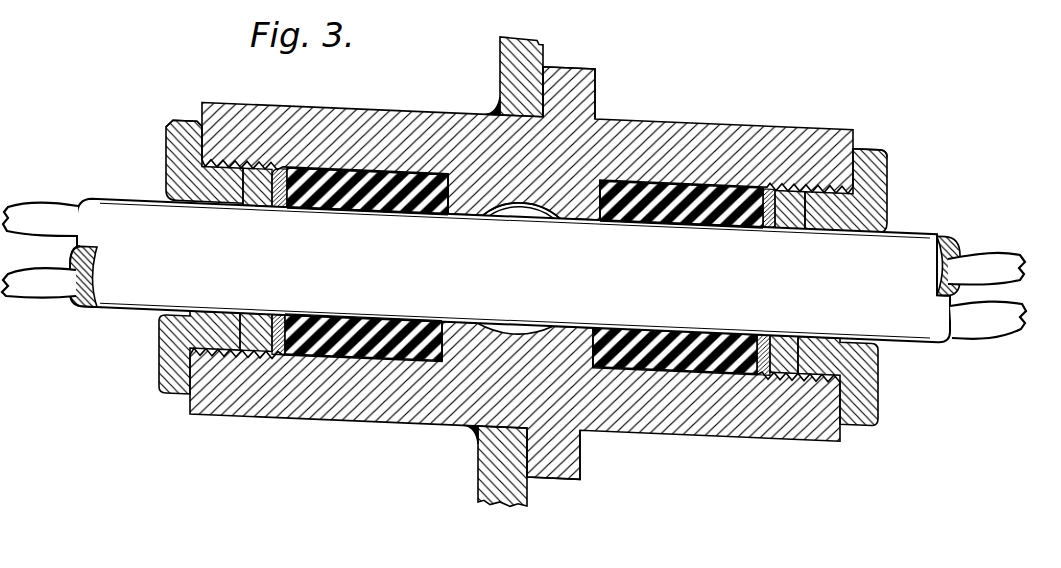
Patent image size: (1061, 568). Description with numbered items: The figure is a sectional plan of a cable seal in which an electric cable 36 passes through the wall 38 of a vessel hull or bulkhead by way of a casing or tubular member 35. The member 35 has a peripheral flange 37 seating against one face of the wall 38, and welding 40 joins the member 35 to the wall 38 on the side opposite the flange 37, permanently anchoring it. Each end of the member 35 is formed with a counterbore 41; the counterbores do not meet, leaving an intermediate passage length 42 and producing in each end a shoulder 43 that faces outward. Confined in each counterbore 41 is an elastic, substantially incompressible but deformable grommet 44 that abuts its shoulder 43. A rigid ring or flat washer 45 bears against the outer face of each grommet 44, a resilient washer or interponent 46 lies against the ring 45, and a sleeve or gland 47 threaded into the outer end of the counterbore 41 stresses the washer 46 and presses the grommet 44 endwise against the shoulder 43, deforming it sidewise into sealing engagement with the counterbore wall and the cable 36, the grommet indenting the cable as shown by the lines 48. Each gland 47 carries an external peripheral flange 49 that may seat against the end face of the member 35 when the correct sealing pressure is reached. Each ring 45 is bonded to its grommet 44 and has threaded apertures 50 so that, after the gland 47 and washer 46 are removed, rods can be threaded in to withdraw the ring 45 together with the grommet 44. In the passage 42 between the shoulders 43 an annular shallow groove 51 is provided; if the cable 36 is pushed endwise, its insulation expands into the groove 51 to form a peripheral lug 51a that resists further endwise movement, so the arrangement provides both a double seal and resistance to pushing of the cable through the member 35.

The casing or tubular member 35 is at (651, 133).
The electric cable 36 is at (112, 212).
The peripheral flange 37 is at (582, 80).
The wall 38 is at (546, 52).
The welding 40 is at (493, 104).
The counterbore 41 is at (316, 172).
The passage length 42 is at (597, 223).
The shoulder 43 is at (450, 177).
The grommet 44 is at (337, 176).
The rigid ring or flat washer 45 is at (268, 350).
The resilient washer or interponent 46 is at (245, 348).
The sleeve or gland 47 is at (205, 162).
The lines 48 is at (347, 310).
The external peripheral flange 49 is at (180, 120).
The threaded apertures 50 is at (274, 166).
The annular shallow groove 51 is at (507, 222).
The peripheral lug 51a is at (530, 223).